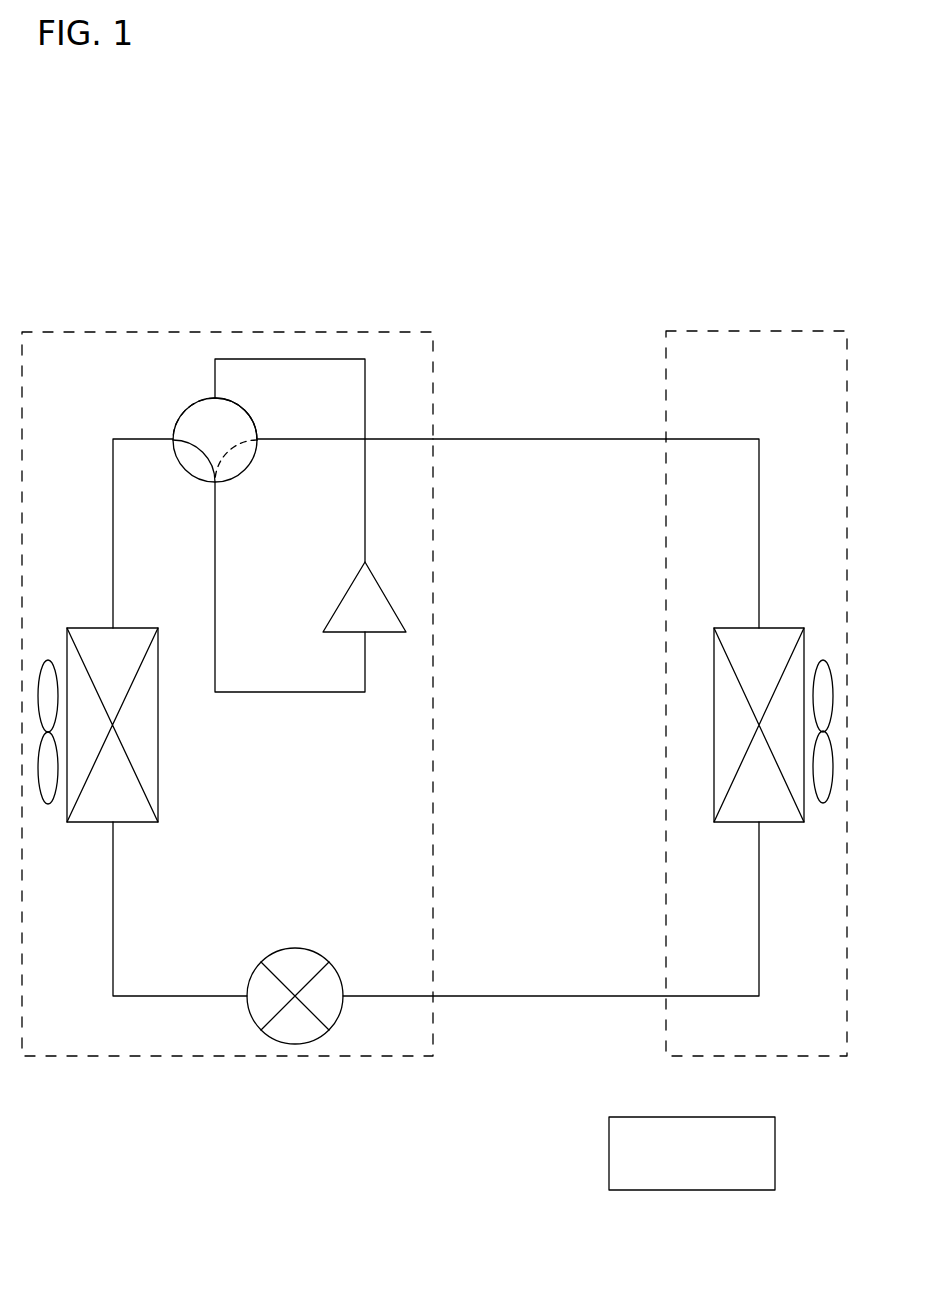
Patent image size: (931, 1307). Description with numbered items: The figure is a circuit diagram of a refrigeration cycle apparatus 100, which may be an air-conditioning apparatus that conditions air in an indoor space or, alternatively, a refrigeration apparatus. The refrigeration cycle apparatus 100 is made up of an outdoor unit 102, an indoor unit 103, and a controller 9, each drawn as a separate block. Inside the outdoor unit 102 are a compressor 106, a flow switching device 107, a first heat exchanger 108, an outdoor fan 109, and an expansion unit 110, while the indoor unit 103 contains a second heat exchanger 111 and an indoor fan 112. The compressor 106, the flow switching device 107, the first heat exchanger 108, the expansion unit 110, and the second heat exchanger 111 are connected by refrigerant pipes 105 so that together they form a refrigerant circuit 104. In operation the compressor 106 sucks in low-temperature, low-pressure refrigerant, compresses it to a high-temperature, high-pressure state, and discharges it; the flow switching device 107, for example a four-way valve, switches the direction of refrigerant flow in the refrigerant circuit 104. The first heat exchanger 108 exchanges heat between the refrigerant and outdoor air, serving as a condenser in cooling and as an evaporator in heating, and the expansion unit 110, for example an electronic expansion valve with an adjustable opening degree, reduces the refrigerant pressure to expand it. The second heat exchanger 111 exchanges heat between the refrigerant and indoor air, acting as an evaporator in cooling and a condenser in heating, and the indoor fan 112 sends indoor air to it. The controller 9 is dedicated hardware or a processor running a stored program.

The refrigeration cycle apparatus 100 is at (658, 268).
The outdoor unit 102 is at (93, 331).
The indoor unit 103 is at (780, 331).
The refrigerant circuit 104 is at (500, 425).
The refrigerant pipes 105 is at (620, 438).
The compressor 106 is at (340, 598).
The flow switching device 107 is at (177, 420).
The first heat exchanger 108 is at (95, 627).
The outdoor fan 109 is at (48, 660).
The expansion unit 110 is at (290, 948).
The second heat exchanger 111 is at (735, 627).
The indoor fan 112 is at (823, 660).
The controller 9 is at (632, 1117).